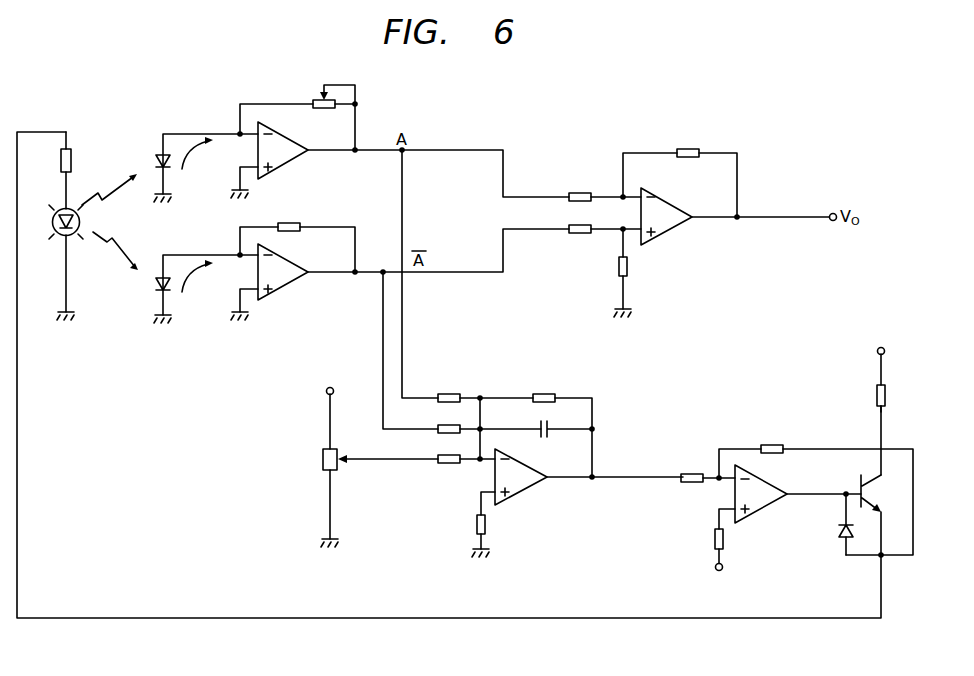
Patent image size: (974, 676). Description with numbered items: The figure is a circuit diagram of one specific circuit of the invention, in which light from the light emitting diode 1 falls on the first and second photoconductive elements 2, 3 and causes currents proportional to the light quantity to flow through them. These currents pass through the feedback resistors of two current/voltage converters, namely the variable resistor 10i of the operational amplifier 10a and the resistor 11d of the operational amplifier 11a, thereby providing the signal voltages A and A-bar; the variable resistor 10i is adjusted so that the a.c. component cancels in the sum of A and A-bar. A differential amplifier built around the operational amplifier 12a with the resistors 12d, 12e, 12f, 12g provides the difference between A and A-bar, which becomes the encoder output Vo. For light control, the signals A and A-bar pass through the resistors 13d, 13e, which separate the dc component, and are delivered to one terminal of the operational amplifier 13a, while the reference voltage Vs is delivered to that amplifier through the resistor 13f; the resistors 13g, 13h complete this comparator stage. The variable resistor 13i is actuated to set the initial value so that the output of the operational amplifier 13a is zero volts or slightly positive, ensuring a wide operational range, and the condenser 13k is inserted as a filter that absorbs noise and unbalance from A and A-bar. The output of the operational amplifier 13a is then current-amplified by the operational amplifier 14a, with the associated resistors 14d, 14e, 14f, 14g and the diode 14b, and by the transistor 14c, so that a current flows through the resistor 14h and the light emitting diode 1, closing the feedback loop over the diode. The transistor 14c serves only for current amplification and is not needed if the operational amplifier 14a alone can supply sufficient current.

The light emitting diode 1 is at (56, 235).
The first photoconductive element 2 is at (159, 150).
The second photoconductive element 3 is at (189, 283).
The operational amplifier 10a is at (300, 156).
The variable resistor 10i is at (323, 110).
The operational amplifier 11a is at (300, 280).
The resistor 11d is at (297, 231).
The operational amplifier 12a is at (672, 233).
The resistor 12d is at (581, 190).
The resistor 12e is at (580, 232).
The resistor 12f is at (689, 146).
The resistor 12g is at (630, 267).
The operational amplifier 13a is at (528, 490).
The resistor 13d is at (450, 392).
The resistor 13e is at (437, 424).
The resistor 13f is at (436, 457).
The resistor 13g is at (545, 392).
The resistor 13h is at (487, 522).
The variable resistor 13i is at (321, 456).
The condenser 13k is at (546, 438).
The operational amplifier 14a is at (767, 503).
The diode 14b is at (839, 543).
The transistor 14c is at (856, 482).
The resistor 14d is at (692, 471).
The resistor 14e is at (771, 440).
The resistor 14f is at (886, 393).
The resistor 14g is at (715, 540).
The resistor 14h is at (73, 158).